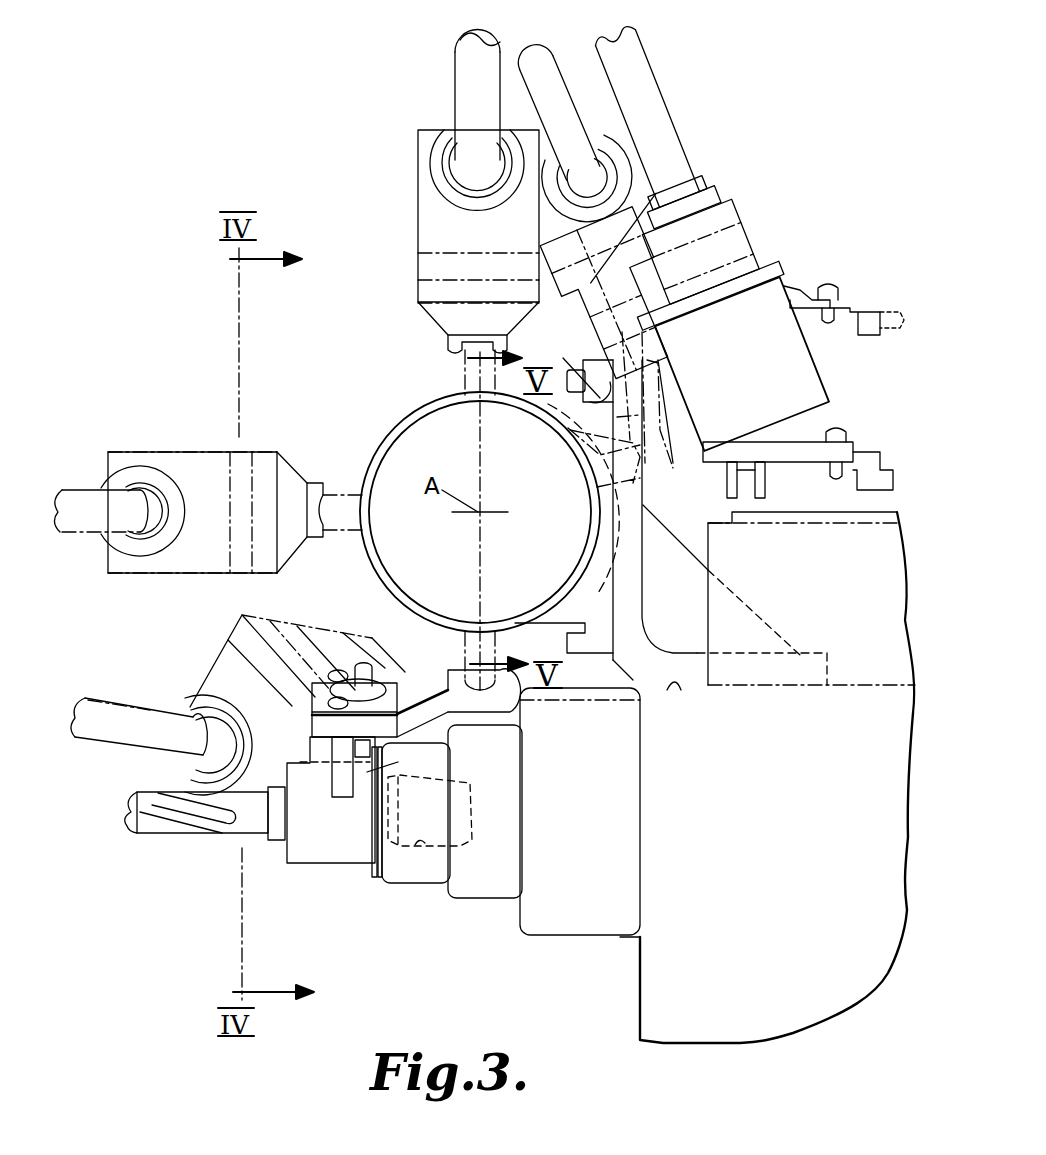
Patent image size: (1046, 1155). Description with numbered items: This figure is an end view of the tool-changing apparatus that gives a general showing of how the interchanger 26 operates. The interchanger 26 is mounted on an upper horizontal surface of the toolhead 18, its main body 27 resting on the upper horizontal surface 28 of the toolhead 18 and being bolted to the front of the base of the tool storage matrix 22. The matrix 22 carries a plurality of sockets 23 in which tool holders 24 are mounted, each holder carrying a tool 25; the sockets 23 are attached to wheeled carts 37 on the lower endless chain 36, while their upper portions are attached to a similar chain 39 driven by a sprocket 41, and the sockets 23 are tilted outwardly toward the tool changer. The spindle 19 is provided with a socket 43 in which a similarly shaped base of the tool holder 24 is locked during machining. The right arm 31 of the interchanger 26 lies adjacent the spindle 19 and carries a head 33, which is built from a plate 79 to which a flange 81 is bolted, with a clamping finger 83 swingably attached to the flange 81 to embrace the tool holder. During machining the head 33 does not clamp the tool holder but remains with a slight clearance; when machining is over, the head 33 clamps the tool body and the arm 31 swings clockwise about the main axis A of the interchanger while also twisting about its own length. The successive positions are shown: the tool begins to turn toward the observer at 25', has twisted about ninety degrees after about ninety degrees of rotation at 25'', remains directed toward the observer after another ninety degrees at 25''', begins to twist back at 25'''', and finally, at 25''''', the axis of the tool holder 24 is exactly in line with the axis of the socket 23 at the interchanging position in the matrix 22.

The toolhead 18 is at (737, 939).
The spindle 19 is at (392, 878).
The tool storage matrix 22 is at (822, 606).
The socket 23 is at (754, 391).
The tool holder 24 is at (738, 212).
The tool 25 is at (205, 840).
The tool position 25' is at (238, 705).
The tool position 25'' is at (205, 496).
The tool position 25''' is at (465, 192).
The tool position 25'''' is at (592, 204).
The tool position 25''''' is at (664, 123).
The interchanger 26 is at (542, 493).
The main body 27 is at (386, 568).
The upper horizontal surface 28 is at (669, 701).
The right arm 31 is at (464, 655).
The head 33 is at (354, 843).
The lower endless chain 36 is at (868, 468).
The wheeled cart 37 is at (766, 492).
The chain 39 is at (846, 318).
The sprocket 41 is at (872, 326).
The socket 43 is at (415, 842).
The plate 79 is at (312, 716).
The flange 81 is at (332, 746).
The clamping finger 83 is at (397, 760).